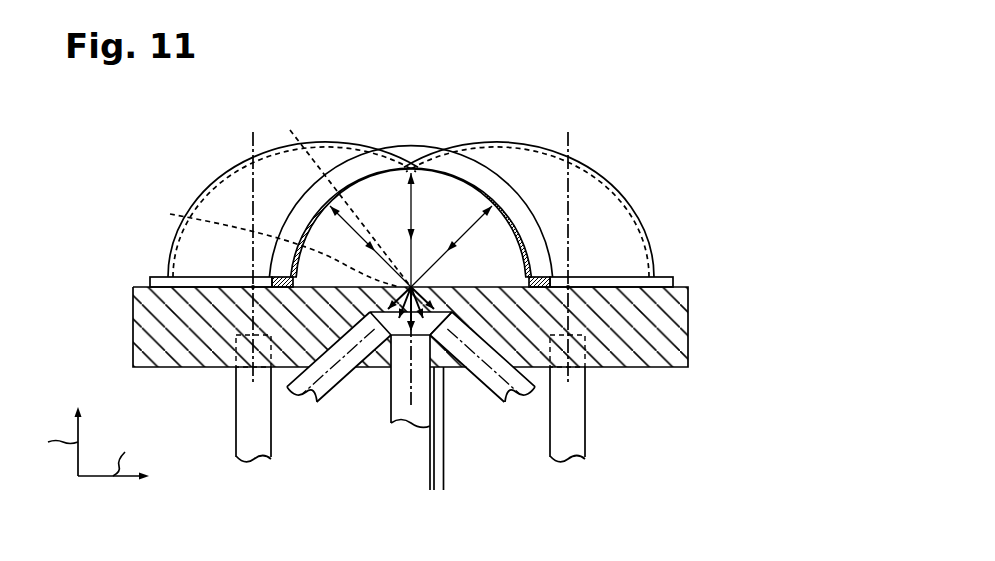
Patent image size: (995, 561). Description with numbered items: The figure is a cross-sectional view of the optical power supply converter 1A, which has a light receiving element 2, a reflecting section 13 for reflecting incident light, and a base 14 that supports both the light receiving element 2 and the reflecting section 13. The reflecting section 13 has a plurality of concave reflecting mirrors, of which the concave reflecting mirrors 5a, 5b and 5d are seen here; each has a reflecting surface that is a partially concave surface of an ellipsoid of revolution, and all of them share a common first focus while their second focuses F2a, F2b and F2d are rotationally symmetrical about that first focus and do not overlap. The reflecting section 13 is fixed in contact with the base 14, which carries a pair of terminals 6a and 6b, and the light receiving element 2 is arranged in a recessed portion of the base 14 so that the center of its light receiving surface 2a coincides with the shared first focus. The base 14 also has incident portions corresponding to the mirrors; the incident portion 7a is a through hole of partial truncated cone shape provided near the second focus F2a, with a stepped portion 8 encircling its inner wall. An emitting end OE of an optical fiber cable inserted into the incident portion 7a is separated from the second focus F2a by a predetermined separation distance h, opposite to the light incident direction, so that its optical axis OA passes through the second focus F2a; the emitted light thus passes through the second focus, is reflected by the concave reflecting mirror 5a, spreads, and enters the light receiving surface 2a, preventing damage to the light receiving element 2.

The optical power supply converter 1A is at (150, 142).
The light receiving element 2 is at (274, 245).
The light receiving surface 2a is at (343, 198).
The concave reflecting mirror 5a is at (387, 174).
The concave reflecting mirror 5b is at (598, 195).
The concave reflecting mirror 5d is at (215, 197).
The incident portion 7a is at (440, 287).
The stepped portion 8 is at (465, 317).
The reflecting section 13 is at (168, 263).
The base 14 is at (133, 328).
The terminal 6a is at (444, 462).
The terminal 6b is at (430, 462).
The optical axis OA is at (320, 404).
The emitting end OE is at (465, 318).
The separation distance h is at (407, 287).
The second focus F2a is at (434, 230).
The second focus F2b is at (570, 276).
The second focus F2d is at (252, 276).